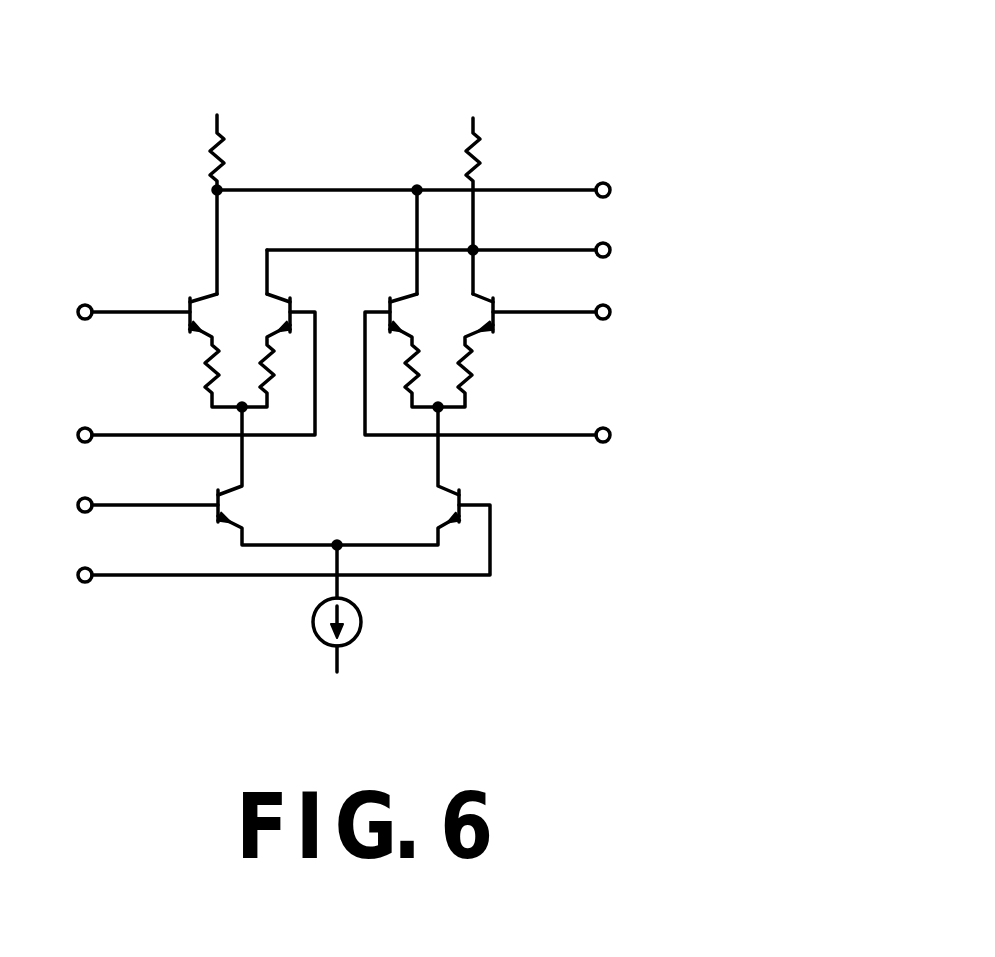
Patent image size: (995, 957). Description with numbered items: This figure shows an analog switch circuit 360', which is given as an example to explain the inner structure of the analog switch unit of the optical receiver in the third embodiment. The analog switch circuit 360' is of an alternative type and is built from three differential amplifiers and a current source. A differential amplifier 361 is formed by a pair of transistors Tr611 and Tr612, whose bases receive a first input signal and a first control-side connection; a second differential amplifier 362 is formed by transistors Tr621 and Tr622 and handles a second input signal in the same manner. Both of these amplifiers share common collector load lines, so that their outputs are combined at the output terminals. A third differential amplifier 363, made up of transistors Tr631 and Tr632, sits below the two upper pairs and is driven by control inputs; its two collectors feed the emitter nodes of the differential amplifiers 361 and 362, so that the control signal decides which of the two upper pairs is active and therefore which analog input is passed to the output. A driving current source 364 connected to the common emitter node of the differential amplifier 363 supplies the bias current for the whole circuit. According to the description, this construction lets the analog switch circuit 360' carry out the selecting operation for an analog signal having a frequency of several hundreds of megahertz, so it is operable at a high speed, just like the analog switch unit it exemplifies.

The analog switch circuit 360' is at (364, 338).
The differential amplifier 361 is at (196, 262).
The differential amplifier 362 is at (495, 348).
The differential amplifier 363 is at (510, 512).
The driving current source 364 is at (364, 628).
The transistor Tr611 is at (187, 301).
The transistor Tr612 is at (318, 285).
The transistor Tr621 is at (400, 292).
The transistor Tr622 is at (506, 278).
The transistor Tr631 is at (210, 493).
The transistor Tr632 is at (500, 491).